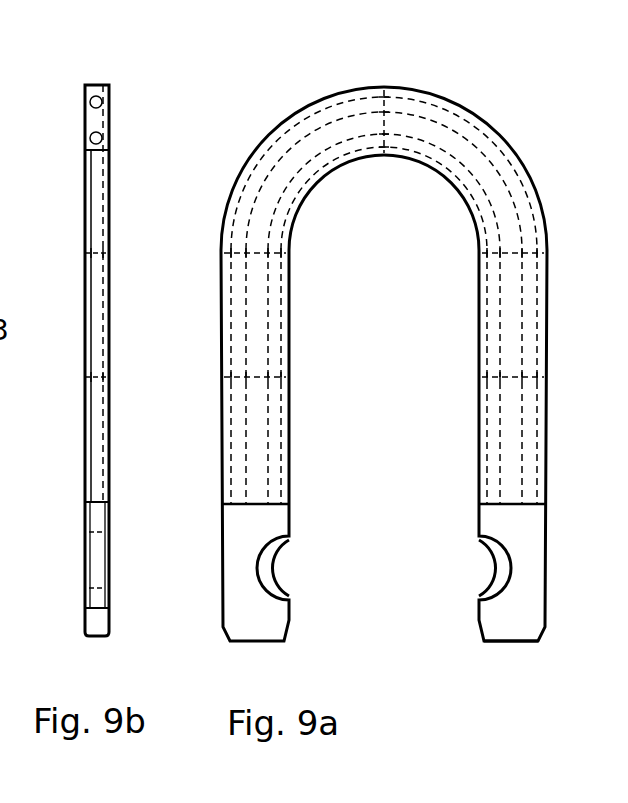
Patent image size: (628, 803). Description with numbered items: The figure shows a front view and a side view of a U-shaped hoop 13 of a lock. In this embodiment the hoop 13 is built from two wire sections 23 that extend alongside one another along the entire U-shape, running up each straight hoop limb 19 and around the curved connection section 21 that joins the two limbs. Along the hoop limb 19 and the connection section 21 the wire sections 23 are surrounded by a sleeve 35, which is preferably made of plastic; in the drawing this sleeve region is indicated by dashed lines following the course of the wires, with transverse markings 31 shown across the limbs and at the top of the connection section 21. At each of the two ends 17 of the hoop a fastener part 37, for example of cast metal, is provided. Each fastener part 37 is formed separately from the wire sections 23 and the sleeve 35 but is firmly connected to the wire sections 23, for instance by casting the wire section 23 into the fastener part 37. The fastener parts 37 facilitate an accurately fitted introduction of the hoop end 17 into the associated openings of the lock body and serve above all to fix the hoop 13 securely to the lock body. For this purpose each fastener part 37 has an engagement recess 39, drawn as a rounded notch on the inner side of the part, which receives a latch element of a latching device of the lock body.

In FIG. 9B, the hoop 13 is at (130, 89).
In FIG. 9A, the hoop 13 is at (277, 85).
In FIG. 9A, the ends of the hoop 17 is at (556, 656).
In FIG. 9A, the hoop limb 19 is at (215, 334).
In FIG. 9A, the connection section 21 is at (455, 93).
In FIG. 9A, the wire sections 23 is at (282, 196).
In FIG. 9A, the transverse seam 31 is at (255, 383).
In FIG. 9A, the sleeve 35 is at (474, 162).
In FIG. 9B, the fastener part 37 is at (98, 568).
In FIG. 9A, the fastener part 37 is at (233, 588).
In FIG. 9A, the engagement recess 39 is at (292, 568).